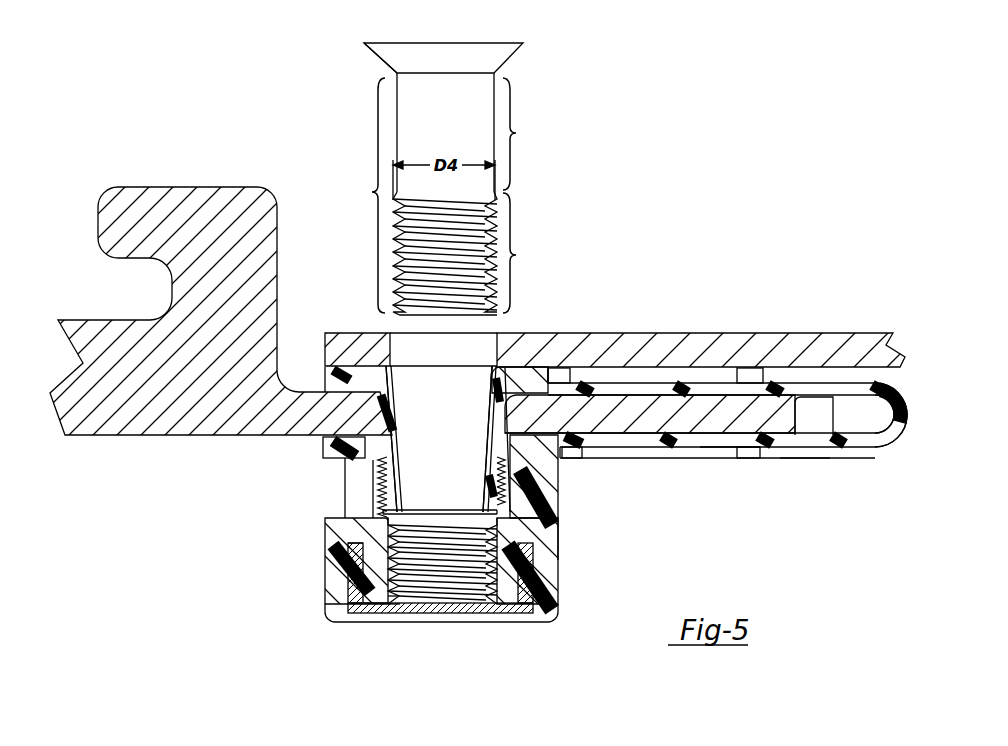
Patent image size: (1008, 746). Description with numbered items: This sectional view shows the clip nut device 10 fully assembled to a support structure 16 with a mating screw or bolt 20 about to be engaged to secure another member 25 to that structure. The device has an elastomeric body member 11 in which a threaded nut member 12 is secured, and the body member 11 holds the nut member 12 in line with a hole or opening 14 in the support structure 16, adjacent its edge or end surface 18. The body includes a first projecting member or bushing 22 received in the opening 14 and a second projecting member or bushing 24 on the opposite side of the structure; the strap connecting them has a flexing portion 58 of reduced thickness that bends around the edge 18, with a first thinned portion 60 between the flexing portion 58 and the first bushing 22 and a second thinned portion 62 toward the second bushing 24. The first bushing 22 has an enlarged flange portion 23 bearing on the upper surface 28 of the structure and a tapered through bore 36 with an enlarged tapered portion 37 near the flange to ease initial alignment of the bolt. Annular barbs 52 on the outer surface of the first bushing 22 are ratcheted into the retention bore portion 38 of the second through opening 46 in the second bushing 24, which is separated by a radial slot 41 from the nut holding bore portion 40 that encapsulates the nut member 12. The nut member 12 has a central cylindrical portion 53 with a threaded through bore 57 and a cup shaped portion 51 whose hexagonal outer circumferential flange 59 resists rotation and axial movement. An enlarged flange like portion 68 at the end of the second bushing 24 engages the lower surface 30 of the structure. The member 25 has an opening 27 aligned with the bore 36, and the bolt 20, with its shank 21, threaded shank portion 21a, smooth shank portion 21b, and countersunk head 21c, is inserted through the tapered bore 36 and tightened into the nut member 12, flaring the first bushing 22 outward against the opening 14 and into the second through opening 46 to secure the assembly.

The clip nut device 10 is at (792, 496).
The elastomeric body member 11 is at (815, 466).
The threaded nut member 12 is at (388, 622).
The hole or opening 14 is at (365, 457).
The support structure 16 is at (150, 415).
The edge or end surface 18 is at (830, 412).
The screw or bolt 20 is at (527, 42).
The shank 21 is at (364, 195).
The threaded shank portion 21a is at (526, 253).
The smooth shank portion 21b is at (526, 134).
The countersunk or flush type head 21c is at (383, 64).
The first projecting member or bushing 22 is at (503, 460).
The enlarged flange portion 23 is at (352, 332).
The second projecting member or bushing 24 is at (558, 548).
The member to be secured 25 is at (762, 358).
The opening 27 is at (393, 348).
The upper surface 28 is at (705, 390).
The lower surface 30 is at (655, 447).
The tapered through bore 36 is at (400, 460).
The enlarged tapered portion 37 is at (492, 378).
The retention bore portion 38 is at (497, 438).
The nut holding bore portion 40 is at (500, 605).
The radial slot 41 is at (370, 493).
The second through opening 46 is at (558, 542).
The cup shaped portion 51 is at (377, 607).
The annular barbs 52 is at (395, 487).
The central cylindrical portion 53 is at (363, 592).
The threaded through bore 57 is at (392, 600).
The flexing portion 58 is at (833, 397).
The outer circumferential flange 59 is at (348, 578).
The first thinned portion 60 is at (640, 370).
The second thinned portion 62 is at (708, 458).
The enlarged flange like portion 68 is at (322, 447).